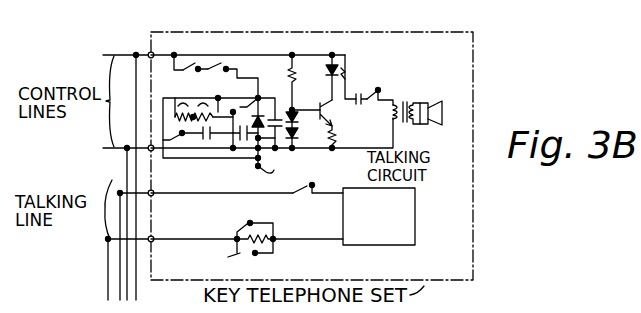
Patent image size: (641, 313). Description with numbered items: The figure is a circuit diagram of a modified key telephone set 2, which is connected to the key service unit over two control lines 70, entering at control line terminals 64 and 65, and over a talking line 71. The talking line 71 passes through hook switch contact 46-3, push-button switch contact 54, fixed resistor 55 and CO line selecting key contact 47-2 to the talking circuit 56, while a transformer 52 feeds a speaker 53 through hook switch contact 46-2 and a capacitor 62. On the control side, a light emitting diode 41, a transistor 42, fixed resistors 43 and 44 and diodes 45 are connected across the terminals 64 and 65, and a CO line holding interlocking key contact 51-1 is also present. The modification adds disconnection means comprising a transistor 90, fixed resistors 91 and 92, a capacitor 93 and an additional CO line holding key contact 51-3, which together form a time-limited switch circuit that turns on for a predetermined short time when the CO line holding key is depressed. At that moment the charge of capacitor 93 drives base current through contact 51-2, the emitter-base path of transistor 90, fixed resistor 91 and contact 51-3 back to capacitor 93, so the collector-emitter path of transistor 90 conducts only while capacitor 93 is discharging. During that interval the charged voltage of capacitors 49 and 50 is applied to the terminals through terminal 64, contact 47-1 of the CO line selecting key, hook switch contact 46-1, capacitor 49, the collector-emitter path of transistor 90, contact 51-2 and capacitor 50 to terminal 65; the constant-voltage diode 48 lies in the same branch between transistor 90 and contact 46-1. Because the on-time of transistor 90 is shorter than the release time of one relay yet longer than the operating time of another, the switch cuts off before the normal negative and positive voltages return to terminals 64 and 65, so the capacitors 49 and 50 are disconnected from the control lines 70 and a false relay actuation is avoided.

The key telephone set 2 is at (382, 32).
The light emitting diode 41 is at (338, 64).
The transistor 42 is at (336, 113).
The fixed resistor 43 is at (340, 138).
The fixed resistor 44 is at (298, 63).
The diode 45 is at (300, 140).
The hook switch contact 46-1 is at (226, 64).
The hook switch contact 46-2 is at (381, 90).
The hook switch contact 46-3 is at (297, 197).
The CO line selecting key contact 47-1 is at (188, 64).
The CO line selecting key contact 47-2 is at (256, 257).
The constant-voltage diode 48 is at (257, 131).
The capacitor 49 is at (278, 112).
The capacitor 50 is at (243, 142).
The CO line holding interlocking key contact 51-1 is at (281, 168).
The CO line holding interlocking key contact 51-2 is at (246, 104).
The CO line holding key additional contact 51-3 is at (175, 150).
The transformer 52 is at (405, 125).
The speaker 53 is at (438, 126).
The push-button switch contact 54 is at (237, 229).
The fixed resistor 55 is at (274, 233).
The talking circuit 56 is at (416, 211).
The capacitor 62 is at (357, 92).
The control line terminal 64 is at (149, 53).
The control line terminal 65 is at (148, 147).
The control lines 70 is at (115, 101).
The talking line 71 is at (111, 201).
The transistor 90 is at (193, 108).
The fixed resistor 91 is at (177, 106).
The fixed resistor 92 is at (213, 108).
The capacitor 93 is at (206, 142).